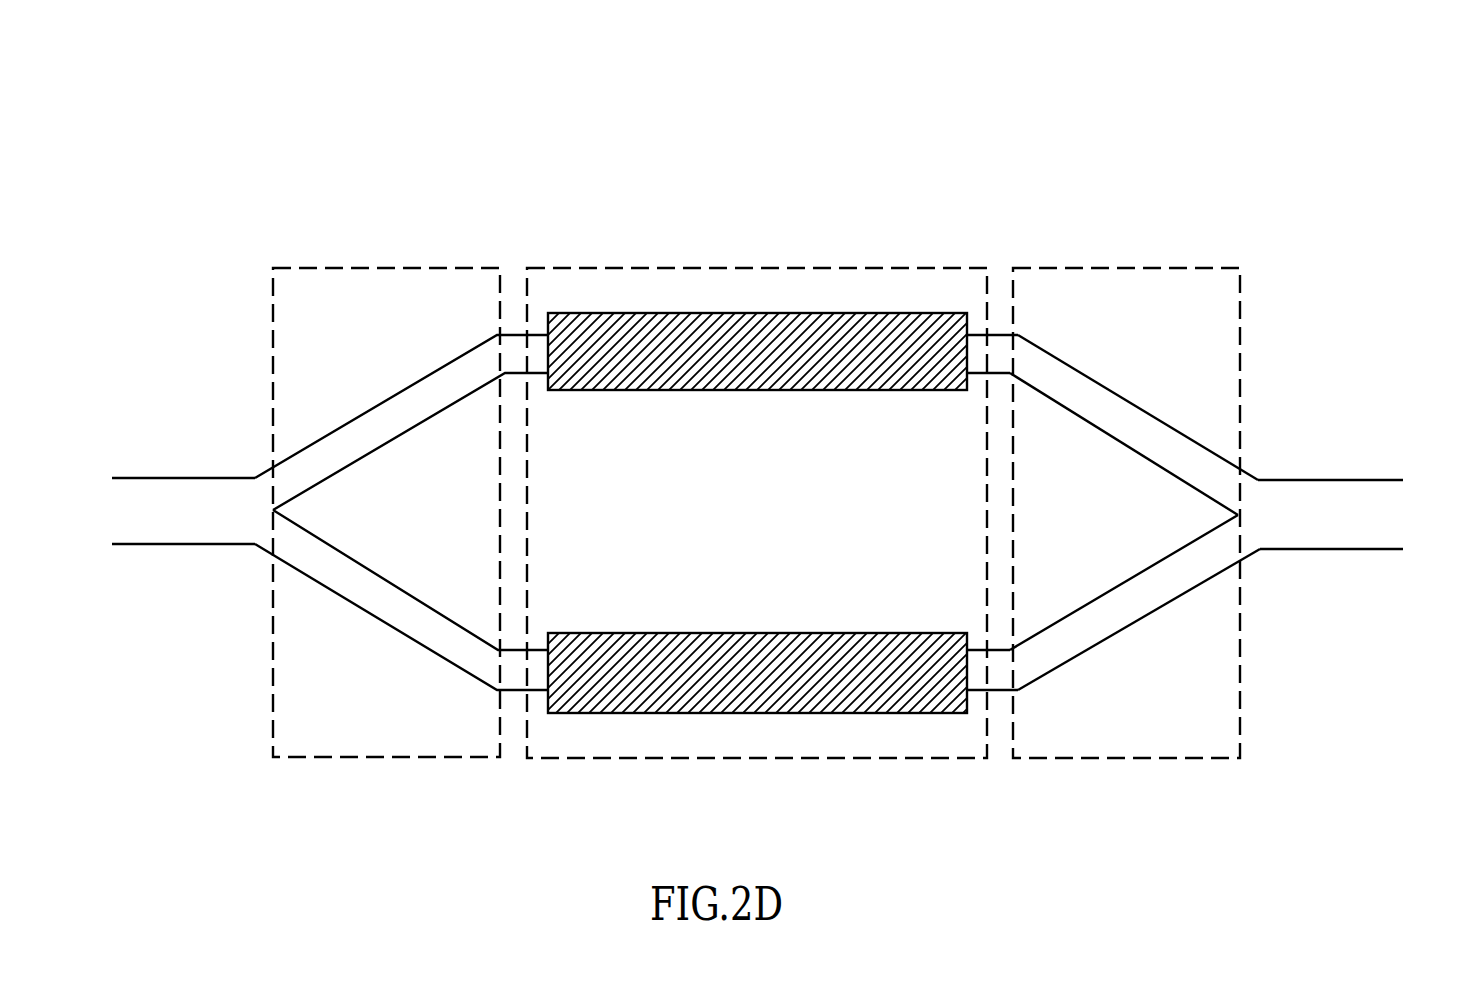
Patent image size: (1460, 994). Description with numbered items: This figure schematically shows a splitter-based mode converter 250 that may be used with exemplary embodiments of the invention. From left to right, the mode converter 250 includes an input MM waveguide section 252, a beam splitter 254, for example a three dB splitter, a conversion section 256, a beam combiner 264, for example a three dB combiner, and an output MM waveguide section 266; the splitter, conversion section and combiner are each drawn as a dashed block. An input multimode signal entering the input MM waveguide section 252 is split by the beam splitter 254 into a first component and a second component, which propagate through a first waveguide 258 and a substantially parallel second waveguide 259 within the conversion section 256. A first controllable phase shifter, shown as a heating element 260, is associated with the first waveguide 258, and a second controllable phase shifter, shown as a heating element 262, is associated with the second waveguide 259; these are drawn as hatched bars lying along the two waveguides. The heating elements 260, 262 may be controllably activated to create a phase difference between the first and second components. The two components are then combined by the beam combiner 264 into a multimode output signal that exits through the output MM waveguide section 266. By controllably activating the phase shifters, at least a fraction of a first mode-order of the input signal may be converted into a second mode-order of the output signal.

The splitter-based mode converter 250 is at (401, 77).
The input MM waveguide section 252 is at (190, 477).
The beam splitter 254 is at (372, 248).
The conversion section 256 is at (693, 248).
The first waveguide 258 is at (980, 333).
The second waveguide 259 is at (980, 714).
The heating element 260 is at (757, 392).
The heating element 262 is at (790, 632).
The beam combiner 264 is at (1139, 253).
The output MM waveguide section 266 is at (1332, 479).